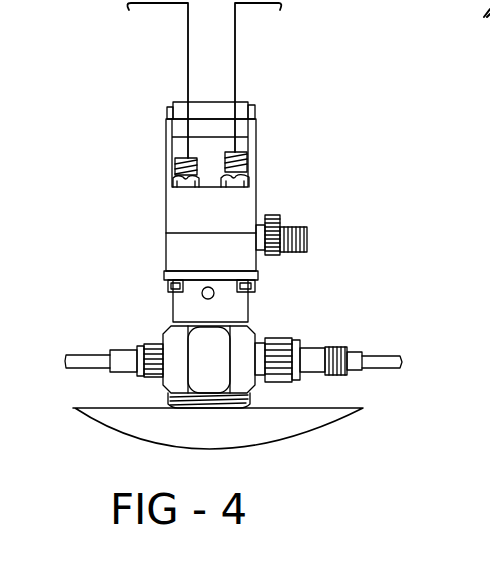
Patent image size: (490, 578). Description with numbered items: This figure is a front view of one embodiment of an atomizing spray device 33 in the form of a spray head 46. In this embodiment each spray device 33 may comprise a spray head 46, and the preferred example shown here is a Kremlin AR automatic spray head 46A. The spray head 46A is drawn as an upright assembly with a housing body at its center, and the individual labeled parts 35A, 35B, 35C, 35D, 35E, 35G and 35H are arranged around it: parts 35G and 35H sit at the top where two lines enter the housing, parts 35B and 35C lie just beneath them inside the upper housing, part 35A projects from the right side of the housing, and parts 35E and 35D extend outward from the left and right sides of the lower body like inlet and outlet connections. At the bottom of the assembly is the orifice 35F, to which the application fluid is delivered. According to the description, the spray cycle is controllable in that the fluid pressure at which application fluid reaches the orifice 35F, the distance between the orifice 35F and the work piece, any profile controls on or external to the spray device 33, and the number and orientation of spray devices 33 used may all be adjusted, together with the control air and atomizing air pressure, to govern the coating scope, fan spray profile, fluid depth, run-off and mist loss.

The spray device 33 is at (264, 149).
The spray head 46 is at (211, 186).
The Kremlin AR automatic spray head 46A is at (211, 296).
The adjustment knob 35A is at (292, 225).
The terminal nut 35B is at (173, 163).
The terminal nut 35C is at (249, 167).
The outlet fitting 35D is at (328, 352).
The inlet fitting 35E is at (138, 351).
The orifice 35F is at (208, 410).
The electrical terminal 35G is at (243, 151).
The electrical terminal 35H is at (184, 160).